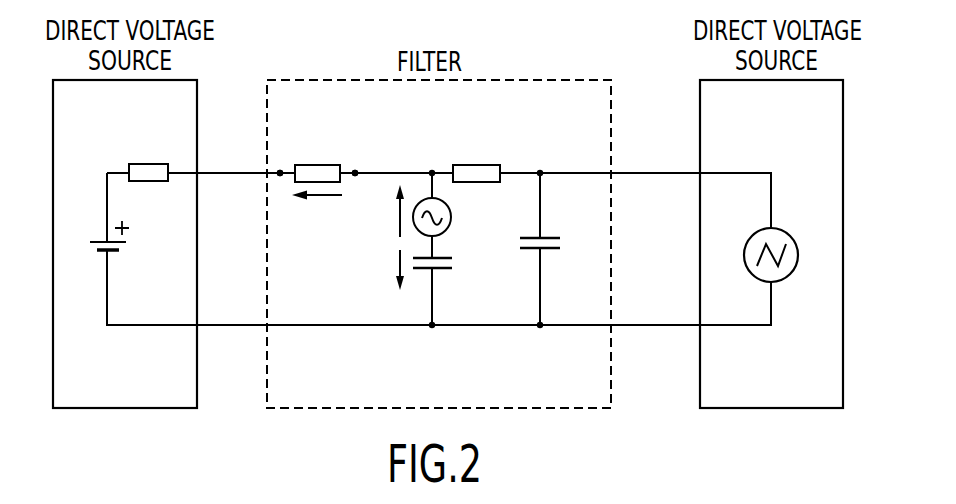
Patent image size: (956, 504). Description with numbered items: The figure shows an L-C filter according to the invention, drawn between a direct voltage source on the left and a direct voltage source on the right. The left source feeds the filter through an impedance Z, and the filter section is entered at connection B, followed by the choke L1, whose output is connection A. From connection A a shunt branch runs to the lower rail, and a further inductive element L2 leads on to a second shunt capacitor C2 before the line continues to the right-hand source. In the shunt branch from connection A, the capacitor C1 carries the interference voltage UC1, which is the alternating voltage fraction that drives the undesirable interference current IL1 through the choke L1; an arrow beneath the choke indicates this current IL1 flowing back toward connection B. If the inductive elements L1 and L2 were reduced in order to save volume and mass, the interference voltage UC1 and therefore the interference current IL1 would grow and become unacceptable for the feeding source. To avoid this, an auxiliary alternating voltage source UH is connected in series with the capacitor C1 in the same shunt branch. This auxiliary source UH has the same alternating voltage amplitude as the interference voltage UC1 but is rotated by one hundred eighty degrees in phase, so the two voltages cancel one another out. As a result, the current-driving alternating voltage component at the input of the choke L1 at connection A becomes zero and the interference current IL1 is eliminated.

The source impedance Z is at (148, 153).
The choke L1 is at (317, 157).
The inductive element L2 is at (476, 157).
The capacitor C1 is at (450, 263).
The second capacitor of filter C2 is at (557, 240).
The connection A is at (355, 156).
The node B is at (280, 156).
The interference current IL1 is at (317, 214).
The auxiliary alternating voltage source UH is at (407, 211).
The interference voltage UC1 is at (377, 270).